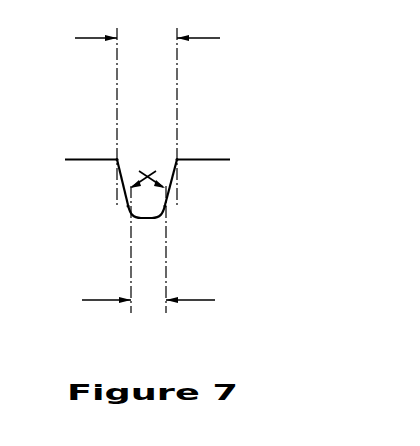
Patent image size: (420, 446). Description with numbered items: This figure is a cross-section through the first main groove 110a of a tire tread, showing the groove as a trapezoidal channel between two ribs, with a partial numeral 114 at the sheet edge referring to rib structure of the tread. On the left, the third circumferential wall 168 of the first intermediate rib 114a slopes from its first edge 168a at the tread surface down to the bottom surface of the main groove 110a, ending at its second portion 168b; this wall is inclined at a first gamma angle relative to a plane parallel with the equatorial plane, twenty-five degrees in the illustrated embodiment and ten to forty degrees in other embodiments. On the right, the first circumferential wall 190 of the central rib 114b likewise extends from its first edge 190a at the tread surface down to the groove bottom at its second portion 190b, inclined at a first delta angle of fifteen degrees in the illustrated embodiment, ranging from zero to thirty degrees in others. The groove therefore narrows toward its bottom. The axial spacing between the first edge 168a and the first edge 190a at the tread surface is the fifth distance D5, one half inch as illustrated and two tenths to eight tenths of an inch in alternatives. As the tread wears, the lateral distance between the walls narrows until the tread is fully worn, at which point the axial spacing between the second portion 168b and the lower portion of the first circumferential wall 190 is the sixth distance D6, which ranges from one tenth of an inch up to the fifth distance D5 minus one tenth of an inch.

The first main groove 110a is at (145, 219).
The top surface 114 is at (403, 113).
The first intermediate rib 114a is at (88, 160).
The central rib 114b is at (207, 160).
The third circumferential wall 168 is at (125, 194).
The first edge 168a is at (117, 159).
The second portion 168b is at (128, 208).
The first circumferential wall 190 is at (169, 194).
The first edge 190a is at (177, 159).
The second portion 190b is at (164, 210).
The fifth distance D5 is at (147, 117).
The sixth distance D6 is at (148, 260).